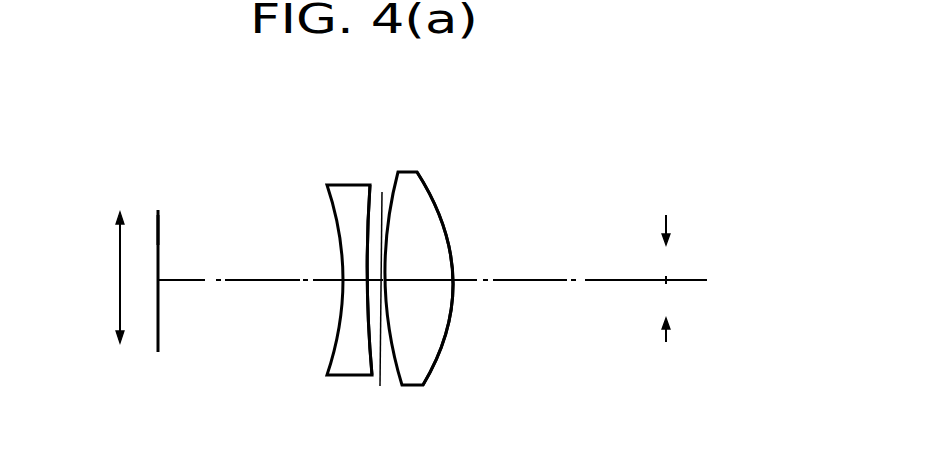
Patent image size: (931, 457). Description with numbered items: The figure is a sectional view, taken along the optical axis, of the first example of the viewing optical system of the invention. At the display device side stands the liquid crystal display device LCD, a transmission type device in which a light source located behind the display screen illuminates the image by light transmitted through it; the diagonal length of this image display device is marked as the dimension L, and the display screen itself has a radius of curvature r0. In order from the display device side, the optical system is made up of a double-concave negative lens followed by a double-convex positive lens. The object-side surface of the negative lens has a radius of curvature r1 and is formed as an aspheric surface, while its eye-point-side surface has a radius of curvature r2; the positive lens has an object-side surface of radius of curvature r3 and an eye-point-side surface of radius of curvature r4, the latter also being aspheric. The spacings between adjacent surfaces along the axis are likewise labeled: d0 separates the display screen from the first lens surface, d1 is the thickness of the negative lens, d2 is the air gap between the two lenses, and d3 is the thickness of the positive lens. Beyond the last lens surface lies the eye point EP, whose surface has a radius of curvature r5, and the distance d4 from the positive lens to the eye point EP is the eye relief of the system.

The liquid crystal display device LCD is at (158, 261).
The diagonal length of the image display device L is at (107, 277).
The radius of curvature of the display screen r0 is at (161, 229).
The radius of curvature of lens surface r1 is at (334, 216).
The radius of curvature of lens surface r2 is at (367, 212).
The radius of curvature of lens surface r3 is at (390, 196).
The radius of curvature of lens surface r4 is at (433, 193).
The radius of curvature of the surface of the eye point r5 is at (667, 249).
The spacing between adjacent surfaces d0 is at (262, 300).
The spacing between adjacent lens surfaces d1 is at (358, 282).
The spacing between adjacent lens surfaces d2 is at (377, 308).
The spacing between adjacent lens surfaces d3 is at (419, 299).
The eye relief d4 is at (530, 300).
The eye point EP is at (667, 263).